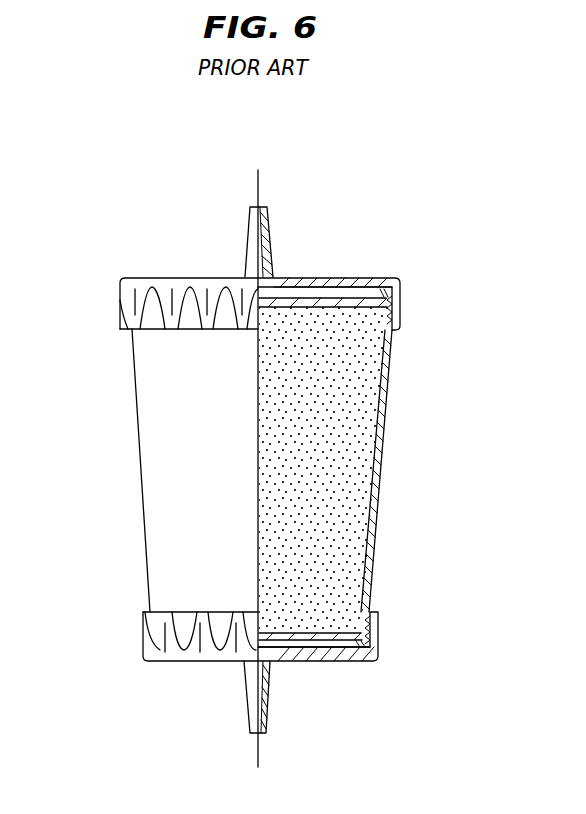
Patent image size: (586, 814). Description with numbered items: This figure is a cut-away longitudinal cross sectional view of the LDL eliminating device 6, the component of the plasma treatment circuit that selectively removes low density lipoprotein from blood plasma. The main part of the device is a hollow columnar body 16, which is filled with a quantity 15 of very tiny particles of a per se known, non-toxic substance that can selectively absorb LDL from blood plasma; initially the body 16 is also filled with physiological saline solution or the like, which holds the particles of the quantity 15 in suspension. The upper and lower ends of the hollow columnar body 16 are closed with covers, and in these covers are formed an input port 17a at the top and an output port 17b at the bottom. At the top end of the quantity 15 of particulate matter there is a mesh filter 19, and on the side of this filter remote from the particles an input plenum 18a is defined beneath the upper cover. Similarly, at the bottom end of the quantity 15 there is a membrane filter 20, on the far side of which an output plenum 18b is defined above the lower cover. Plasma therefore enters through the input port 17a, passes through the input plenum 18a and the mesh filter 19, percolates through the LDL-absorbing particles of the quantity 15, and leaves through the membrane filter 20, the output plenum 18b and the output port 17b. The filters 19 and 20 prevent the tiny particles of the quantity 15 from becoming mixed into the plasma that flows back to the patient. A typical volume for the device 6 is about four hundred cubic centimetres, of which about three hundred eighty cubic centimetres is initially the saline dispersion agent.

The LDL eliminating device 6 is at (152, 500).
The quantity of tiny particles 15 is at (337, 465).
The hollow columnar body 16 is at (388, 373).
The input port 17a is at (262, 206).
The output port 17b is at (259, 735).
The input plenum 18a is at (298, 292).
The output plenum 18b is at (306, 645).
The mesh filter 19 is at (340, 300).
The membrane filter 20 is at (285, 640).